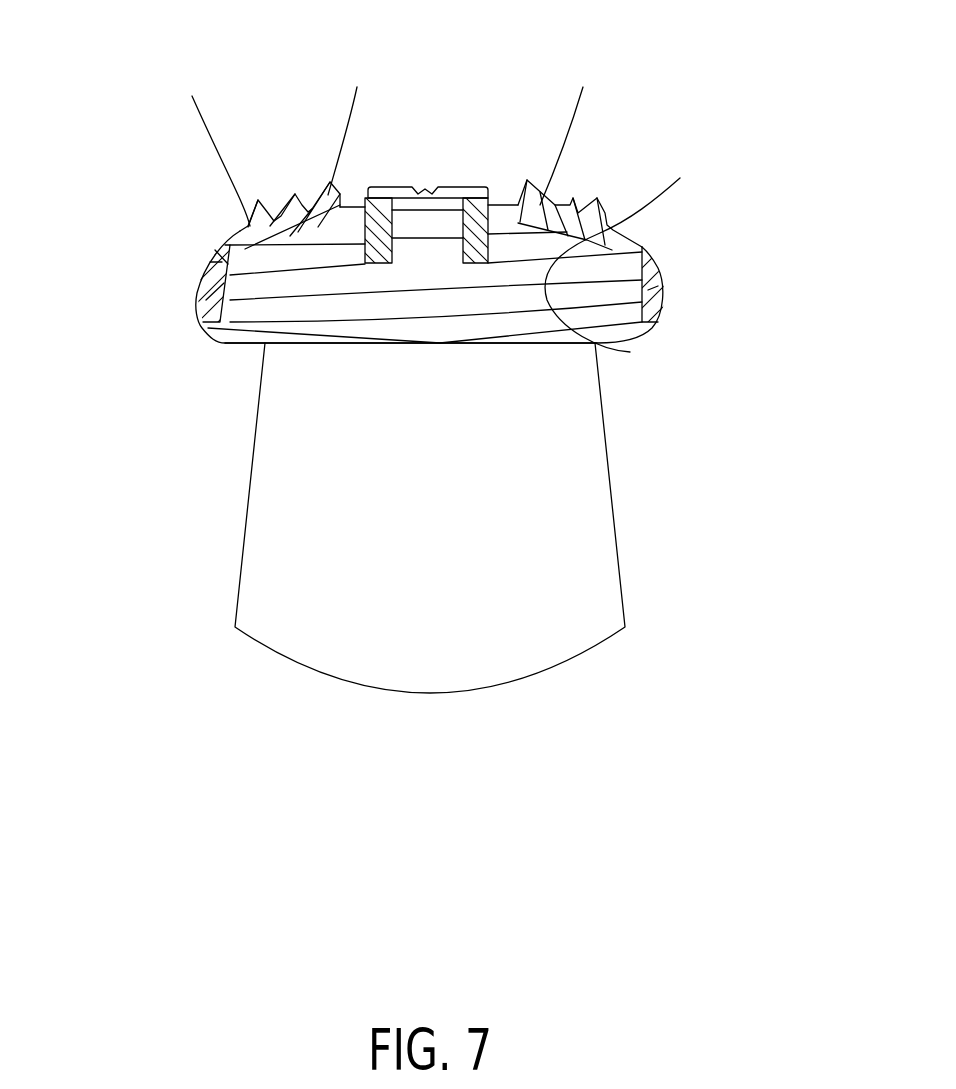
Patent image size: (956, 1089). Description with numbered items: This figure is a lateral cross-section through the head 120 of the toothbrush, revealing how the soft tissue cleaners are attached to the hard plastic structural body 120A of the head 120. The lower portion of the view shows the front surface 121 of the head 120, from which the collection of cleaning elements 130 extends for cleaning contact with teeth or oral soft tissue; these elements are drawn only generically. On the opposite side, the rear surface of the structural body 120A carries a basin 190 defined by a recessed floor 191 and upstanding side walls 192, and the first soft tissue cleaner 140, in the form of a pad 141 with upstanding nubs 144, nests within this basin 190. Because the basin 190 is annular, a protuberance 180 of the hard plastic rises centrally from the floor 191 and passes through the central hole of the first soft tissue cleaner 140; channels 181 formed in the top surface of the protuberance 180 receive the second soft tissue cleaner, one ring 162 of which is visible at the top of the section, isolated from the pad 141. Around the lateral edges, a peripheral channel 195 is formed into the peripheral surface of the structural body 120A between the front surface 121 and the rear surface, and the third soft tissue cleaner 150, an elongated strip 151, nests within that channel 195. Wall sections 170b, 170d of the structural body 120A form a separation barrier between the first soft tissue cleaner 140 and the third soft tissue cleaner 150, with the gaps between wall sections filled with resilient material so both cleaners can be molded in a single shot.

The head 120 is at (755, 105).
The structural body 120A is at (607, 322).
The front surface 121 is at (282, 352).
The collection of cleaning elements 130 is at (625, 523).
The first soft tissue cleaner 140 is at (265, 210).
The pad 141 is at (238, 232).
The nubs 144 is at (276, 188).
The third soft tissue cleaner 150 is at (190, 272).
The elongated strip 151 is at (208, 246).
The ring 162 is at (447, 190).
The wall section 170b is at (217, 242).
The wall section 170d is at (625, 248).
The protuberance 180 is at (373, 225).
The channels 181 is at (382, 248).
The basin 190 is at (320, 210).
The recessed floor 191 is at (302, 200).
The upstanding side walls 192 is at (630, 352).
The peripheral channel 195 is at (213, 297).